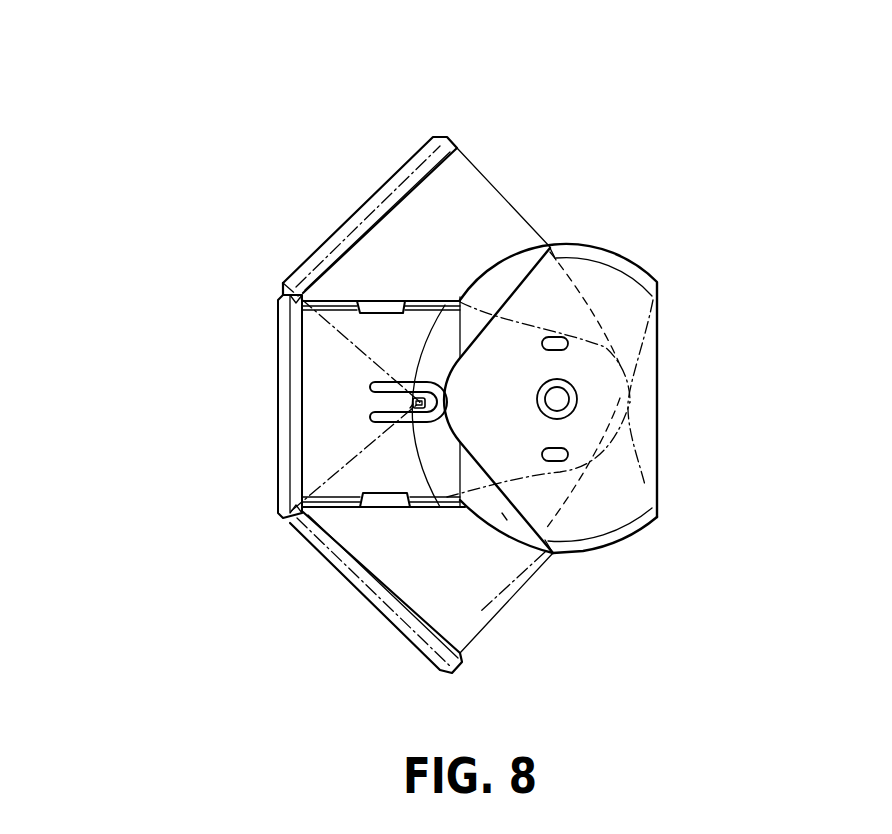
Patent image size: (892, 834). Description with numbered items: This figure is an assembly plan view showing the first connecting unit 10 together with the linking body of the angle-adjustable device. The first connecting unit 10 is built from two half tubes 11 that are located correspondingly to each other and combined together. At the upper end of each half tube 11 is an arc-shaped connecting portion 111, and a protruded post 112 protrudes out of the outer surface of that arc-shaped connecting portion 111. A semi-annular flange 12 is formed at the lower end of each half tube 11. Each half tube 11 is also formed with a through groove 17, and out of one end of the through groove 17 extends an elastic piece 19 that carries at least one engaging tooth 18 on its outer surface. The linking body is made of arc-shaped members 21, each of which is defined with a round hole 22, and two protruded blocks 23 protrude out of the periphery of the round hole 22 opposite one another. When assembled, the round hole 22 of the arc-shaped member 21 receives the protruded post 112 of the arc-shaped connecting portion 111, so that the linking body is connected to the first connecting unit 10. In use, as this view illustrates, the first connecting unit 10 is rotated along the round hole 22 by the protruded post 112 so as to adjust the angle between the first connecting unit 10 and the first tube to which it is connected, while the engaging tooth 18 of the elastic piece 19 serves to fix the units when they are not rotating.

The first connecting unit 10 is at (330, 162).
The half tube 11 is at (350, 314).
The semi-annular flange 12 is at (295, 337).
The through groove 17 is at (410, 410).
The engaging tooth 18 is at (422, 410).
The elastic piece 19 is at (415, 403).
The arc-shaped member 21 is at (637, 265).
The round hole 22 is at (572, 390).
The protruded block 23 is at (556, 460).
The arc-shaped connecting portion 111 is at (583, 545).
The protruded post 112 is at (573, 407).